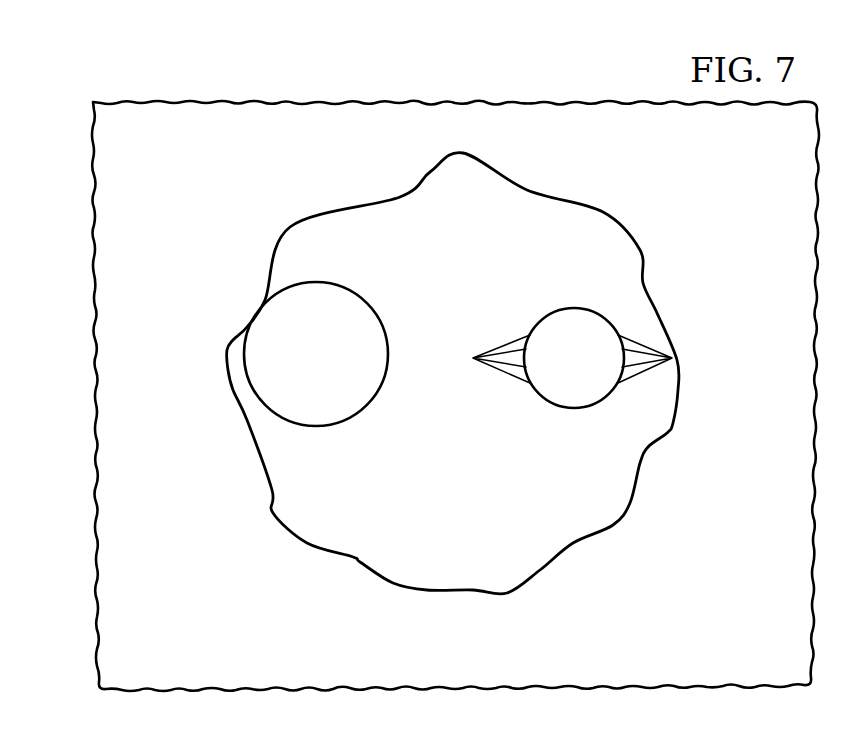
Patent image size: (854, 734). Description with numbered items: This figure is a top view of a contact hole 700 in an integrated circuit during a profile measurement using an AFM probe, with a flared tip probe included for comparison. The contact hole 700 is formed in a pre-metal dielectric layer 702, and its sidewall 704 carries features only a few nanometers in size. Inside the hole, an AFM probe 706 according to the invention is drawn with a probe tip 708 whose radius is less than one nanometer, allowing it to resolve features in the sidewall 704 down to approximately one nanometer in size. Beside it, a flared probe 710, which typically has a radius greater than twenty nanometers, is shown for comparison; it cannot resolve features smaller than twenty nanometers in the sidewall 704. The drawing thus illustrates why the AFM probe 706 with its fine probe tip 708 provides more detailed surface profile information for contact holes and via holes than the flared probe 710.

The contact hole 700 is at (275, 62).
The pre-metal dielectric layer 702 is at (476, 653).
The sidewall 704 is at (435, 588).
The AFM probe 706 is at (543, 290).
The probe tip 708 is at (644, 376).
The flared probe 710 is at (336, 367).